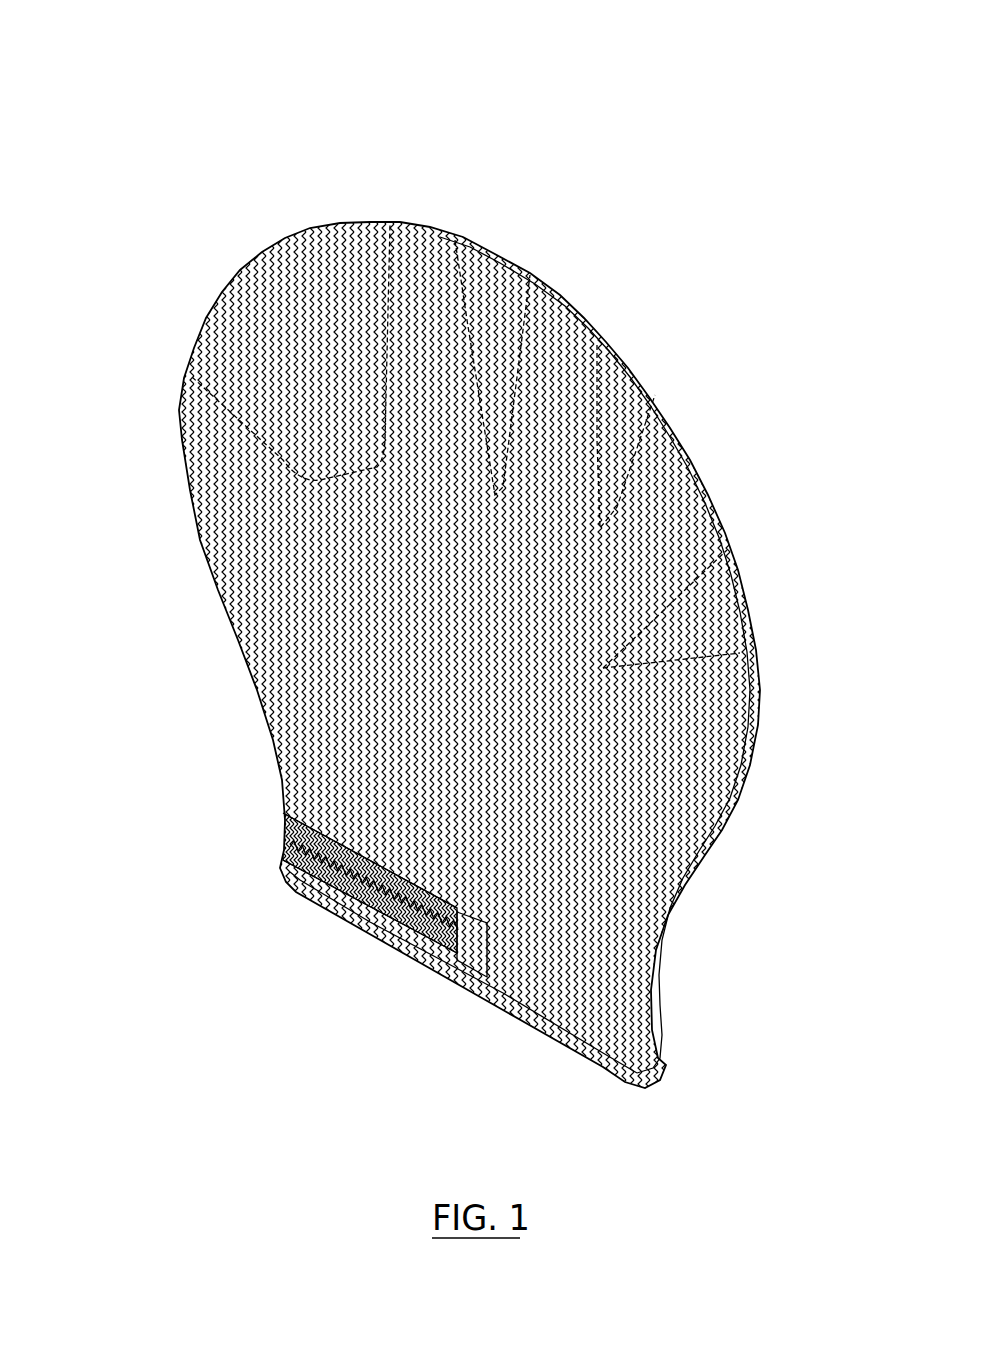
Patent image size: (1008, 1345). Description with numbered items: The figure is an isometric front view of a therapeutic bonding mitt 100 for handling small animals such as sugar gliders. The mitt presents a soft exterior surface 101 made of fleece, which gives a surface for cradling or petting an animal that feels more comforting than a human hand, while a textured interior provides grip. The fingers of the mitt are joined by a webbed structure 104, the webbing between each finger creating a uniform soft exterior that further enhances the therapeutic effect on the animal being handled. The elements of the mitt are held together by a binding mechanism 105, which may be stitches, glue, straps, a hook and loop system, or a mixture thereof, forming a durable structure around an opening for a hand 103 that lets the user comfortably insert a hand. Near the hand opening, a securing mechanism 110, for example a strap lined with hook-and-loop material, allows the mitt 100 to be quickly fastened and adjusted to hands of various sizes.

The therapeutic bonding mitt 100 is at (463, 553).
The soft exterior surface 101 is at (650, 835).
The opening for a hand 103 is at (362, 940).
The webbed structure 104 is at (483, 267).
The binding mechanism 105 is at (597, 340).
The securing mechanism 110 is at (285, 845).